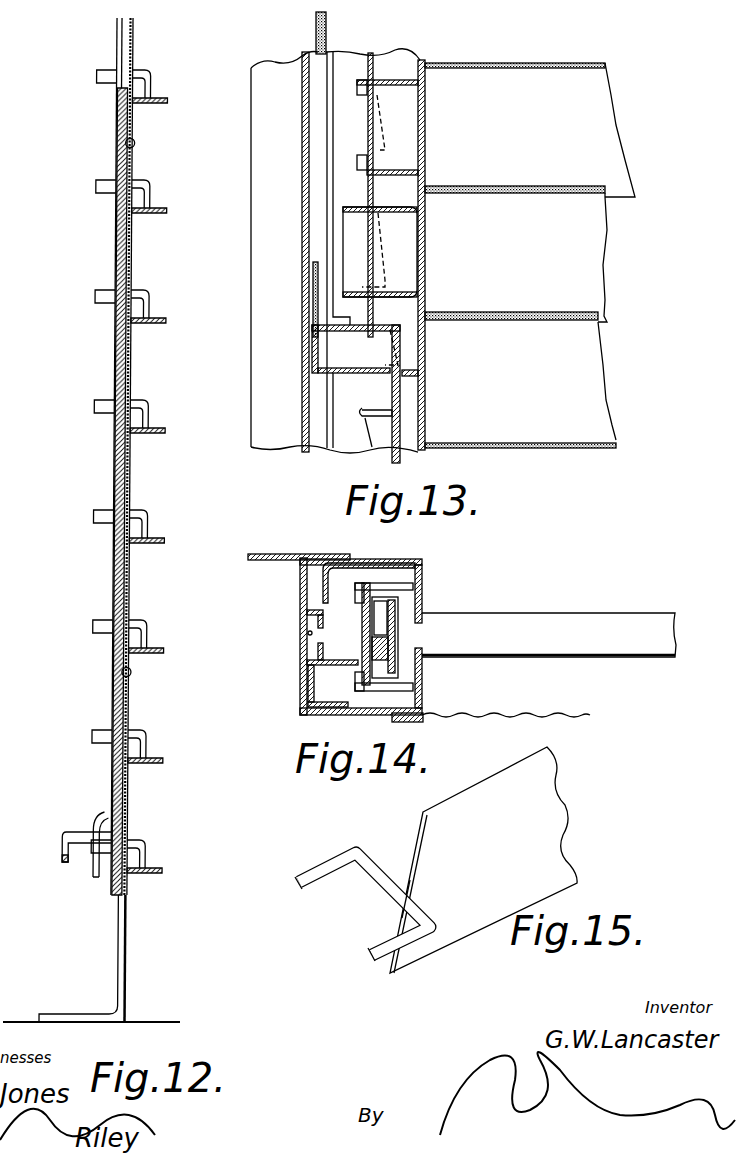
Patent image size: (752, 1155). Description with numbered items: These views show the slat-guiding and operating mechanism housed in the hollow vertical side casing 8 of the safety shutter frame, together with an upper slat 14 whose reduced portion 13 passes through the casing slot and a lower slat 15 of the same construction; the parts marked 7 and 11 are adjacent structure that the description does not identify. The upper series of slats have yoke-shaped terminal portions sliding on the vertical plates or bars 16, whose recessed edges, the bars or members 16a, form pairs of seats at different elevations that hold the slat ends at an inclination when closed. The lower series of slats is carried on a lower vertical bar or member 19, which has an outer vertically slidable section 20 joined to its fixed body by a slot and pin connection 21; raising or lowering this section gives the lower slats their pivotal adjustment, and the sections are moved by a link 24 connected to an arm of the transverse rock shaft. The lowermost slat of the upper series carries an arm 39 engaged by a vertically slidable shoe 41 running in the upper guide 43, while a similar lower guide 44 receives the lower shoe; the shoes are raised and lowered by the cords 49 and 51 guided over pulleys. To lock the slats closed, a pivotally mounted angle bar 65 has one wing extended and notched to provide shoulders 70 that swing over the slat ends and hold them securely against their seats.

In FIG. 13, the wall 7 is at (251, 196).
In FIG. 14, the wall 7 is at (248, 560).
In FIG. 13, the vertical side casing 8 is at (302, 196).
In FIG. 14, the vertical side casing 8 is at (300, 700).
In FIG. 14, the floor 11 is at (502, 712).
In FIG. 14, the reduced portion 13 is at (420, 640).
In FIG. 15, the reduced portion 13 is at (405, 875).
In FIG. 12, the upper slat 14 is at (152, 105).
In FIG. 13, the upper slat 14 is at (518, 186).
In FIG. 14, the upper slat 14 is at (512, 613).
In FIG. 15, the upper slat 14 is at (469, 800).
In FIG. 13, the lower slat 15 is at (372, 143).
In FIG. 14, the lower slat 15 is at (392, 636).
In FIG. 15, the lower slat 15 is at (367, 912).
In FIG. 13, the vertical plate or bar 16 is at (362, 88).
In FIG. 14, the vertical plate or bar 16 is at (408, 602).
In FIG. 15, the vertical plate or bar 16 is at (338, 856).
In FIG. 14, the bar or member 16a is at (362, 628).
In FIG. 12, the lower vertical bar or member 19 is at (130, 372).
In FIG. 13, the lower vertical bar or member 19 is at (400, 455).
In FIG. 12, the slidable section 20 is at (118, 241).
In FIG. 12, the slot and pin connection 21 is at (125, 144).
In FIG. 12, the link 24 is at (100, 822).
In FIG. 13, the arm 39 is at (355, 257).
In FIG. 13, the upper slidable shoe 41 is at (350, 331).
In FIG. 13, the upper guide 43 is at (310, 238).
In FIG. 13, the lower guide 44 is at (320, 398).
In FIG. 14, the lower guide 44 is at (307, 612).
In FIG. 13, the cord 49 is at (313, 300).
In FIG. 14, the cord 49 is at (306, 636).
In FIG. 13, the cord 51 is at (327, 38).
In FIG. 13, the pivotally mounted angle bar 65 is at (330, 445).
In FIG. 14, the pivotally mounted angle bar 65 is at (332, 586).
In FIG. 13, the shoulder 70 is at (362, 410).